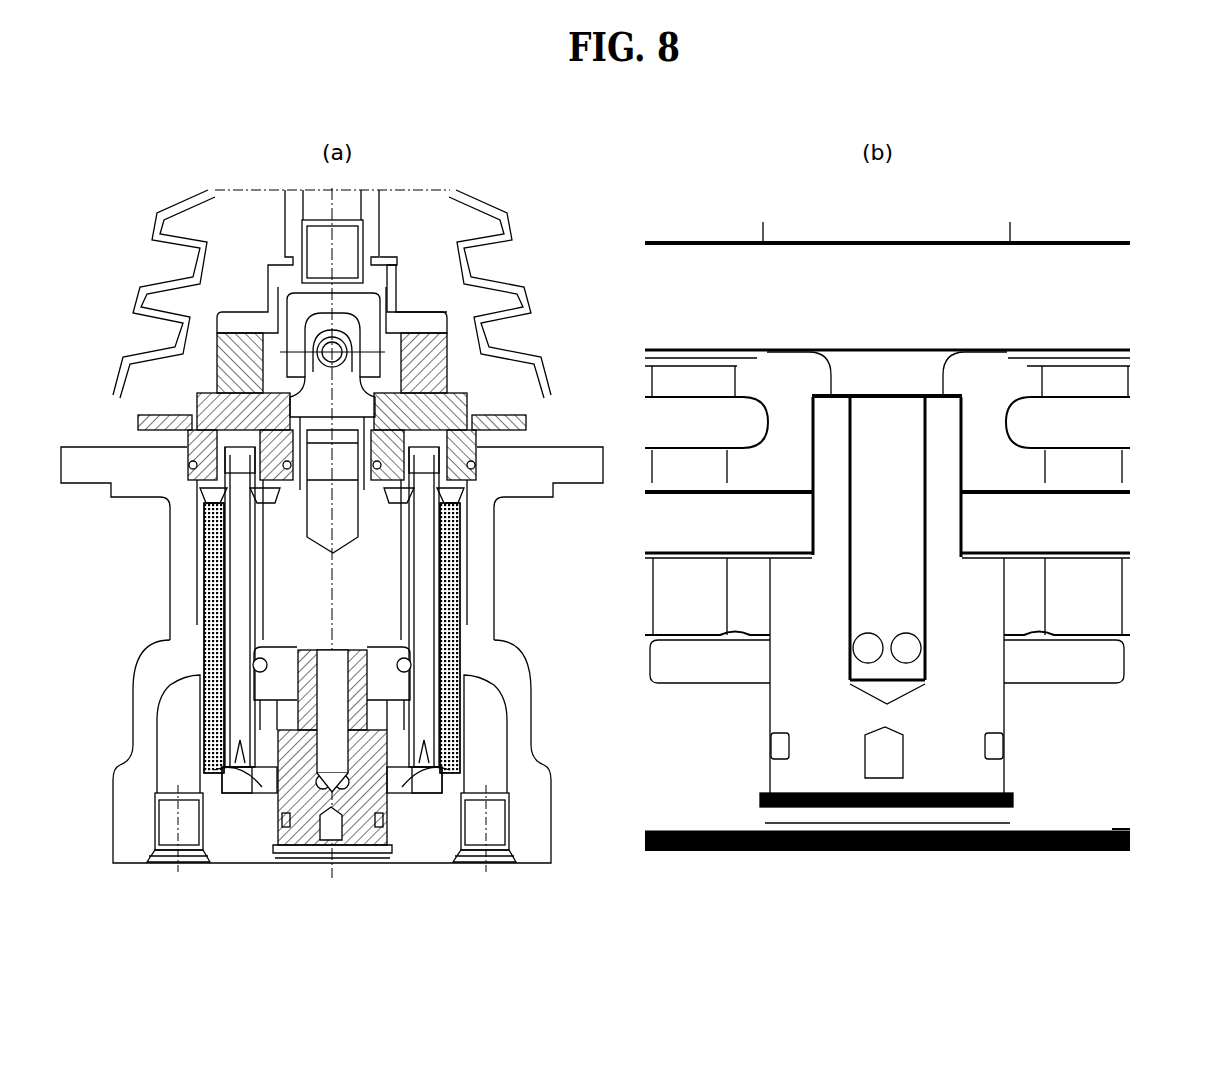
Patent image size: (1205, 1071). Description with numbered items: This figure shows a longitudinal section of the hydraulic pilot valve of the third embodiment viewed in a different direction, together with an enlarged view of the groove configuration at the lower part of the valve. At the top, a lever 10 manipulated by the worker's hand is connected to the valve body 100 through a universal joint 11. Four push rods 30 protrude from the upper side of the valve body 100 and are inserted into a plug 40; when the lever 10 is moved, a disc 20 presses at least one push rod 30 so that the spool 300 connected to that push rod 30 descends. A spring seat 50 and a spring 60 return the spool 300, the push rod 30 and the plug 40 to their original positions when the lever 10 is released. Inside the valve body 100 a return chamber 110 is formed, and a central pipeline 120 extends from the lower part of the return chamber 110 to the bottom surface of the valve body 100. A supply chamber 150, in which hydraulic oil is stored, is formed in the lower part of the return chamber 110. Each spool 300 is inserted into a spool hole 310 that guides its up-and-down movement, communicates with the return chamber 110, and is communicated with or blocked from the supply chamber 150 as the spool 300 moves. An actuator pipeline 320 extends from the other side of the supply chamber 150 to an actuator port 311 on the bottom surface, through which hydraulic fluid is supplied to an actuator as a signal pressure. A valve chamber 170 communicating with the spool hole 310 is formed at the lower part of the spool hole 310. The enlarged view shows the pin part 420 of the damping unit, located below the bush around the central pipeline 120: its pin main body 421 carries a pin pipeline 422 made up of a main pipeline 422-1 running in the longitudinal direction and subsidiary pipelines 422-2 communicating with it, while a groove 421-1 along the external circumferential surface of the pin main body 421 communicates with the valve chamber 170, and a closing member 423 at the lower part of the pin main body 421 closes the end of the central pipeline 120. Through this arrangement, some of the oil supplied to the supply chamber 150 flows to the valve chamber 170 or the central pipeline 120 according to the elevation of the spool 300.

The lever 10 is at (398, 198).
The universal joint 11 is at (292, 345).
The disc 20 is at (417, 305).
The push rod 30 is at (503, 343).
The plug 40 is at (155, 345).
The spring seat 50 is at (115, 432).
The spring 60 is at (200, 514).
The valve body 100 is at (118, 660).
The return chamber 110 is at (212, 602).
The central pipeline 120 is at (225, 652).
The supply chamber 150 is at (165, 755).
The valve chamber 170 is at (165, 835).
The spool 300 is at (215, 557).
The spool hole 310 is at (172, 625).
The actuator port 311 is at (168, 870).
The actuator pipeline 320 is at (142, 800).
The pin part 420 is at (343, 876).
The pin main body 421 is at (1070, 600).
The groove 421-1 is at (400, 860).
The pin pipeline 422 is at (305, 822).
The main pipeline 422-1 is at (888, 548).
The subsidiary pipeline 422-2 is at (855, 635).
The closing member 423 is at (376, 836).